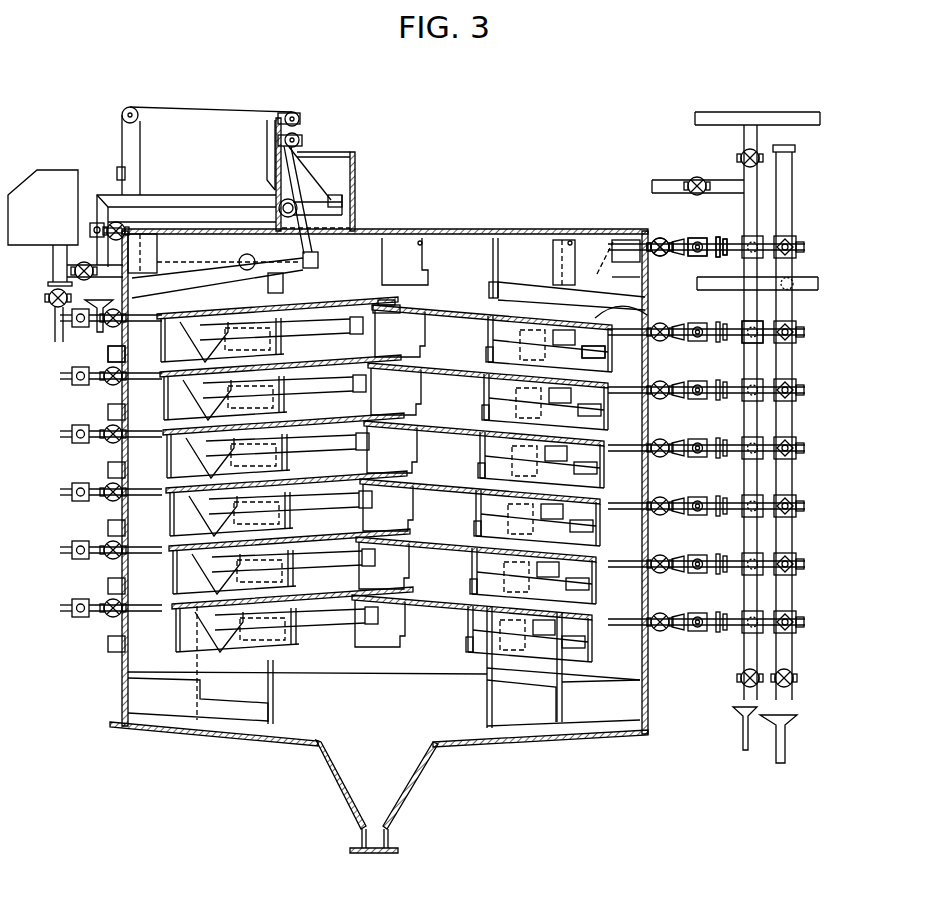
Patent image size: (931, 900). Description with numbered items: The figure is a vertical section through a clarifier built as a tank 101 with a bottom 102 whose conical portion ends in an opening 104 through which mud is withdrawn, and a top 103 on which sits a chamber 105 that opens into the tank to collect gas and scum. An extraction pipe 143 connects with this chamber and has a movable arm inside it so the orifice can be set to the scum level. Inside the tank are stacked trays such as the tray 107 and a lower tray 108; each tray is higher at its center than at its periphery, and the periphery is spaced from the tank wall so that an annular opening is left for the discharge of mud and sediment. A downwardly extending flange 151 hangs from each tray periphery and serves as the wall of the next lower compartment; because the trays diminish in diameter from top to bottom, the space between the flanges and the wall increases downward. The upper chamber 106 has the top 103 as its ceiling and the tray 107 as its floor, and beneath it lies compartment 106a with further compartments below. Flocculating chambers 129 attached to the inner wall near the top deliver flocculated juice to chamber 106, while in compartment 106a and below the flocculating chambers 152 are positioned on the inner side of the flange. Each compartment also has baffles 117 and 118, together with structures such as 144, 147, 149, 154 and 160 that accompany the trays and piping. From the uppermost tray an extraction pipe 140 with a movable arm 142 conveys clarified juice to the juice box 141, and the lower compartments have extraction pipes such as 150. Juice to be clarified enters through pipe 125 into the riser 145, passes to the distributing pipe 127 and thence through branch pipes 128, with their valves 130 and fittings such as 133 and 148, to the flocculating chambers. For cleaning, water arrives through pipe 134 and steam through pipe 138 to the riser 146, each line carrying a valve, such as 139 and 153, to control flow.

The tank 101 is at (121, 680).
The bottom 102 is at (191, 742).
The top 103 is at (438, 232).
The opening 104 is at (380, 853).
The chamber 105 is at (353, 170).
The upper chamber 106 is at (470, 279).
The compartment 106a is at (480, 354).
The tray 107 is at (321, 305).
The inclined shelf 108 is at (289, 366).
The baffle 117 is at (262, 285).
The baffle 118 is at (498, 284).
The pipe 125 is at (700, 286).
The distributing pipe 127 is at (705, 229).
The branch pipes 128 is at (668, 238).
The flocculating chambers 129 is at (622, 250).
The shut-off valve 130 is at (653, 252).
The flange coupling 133 is at (726, 262).
The pipe 134 is at (698, 115).
The pipe 138 is at (652, 186).
The inlet valve 139 is at (688, 180).
The extraction pipe 140 is at (195, 268).
The juice box 141 is at (58, 176).
The movable arm 142 is at (318, 265).
The extraction pipe 143 is at (213, 207).
The pulley ring 144 is at (343, 203).
The riser 145 is at (804, 160).
The riser 146 is at (744, 212).
The partition box 147 is at (419, 246).
The pipe fitting 148 is at (742, 341).
The bracket 149 is at (400, 306).
The extraction pipe 150 is at (108, 353).
The flange 151 is at (128, 336).
The flocculating chamber 152 is at (606, 346).
The valve 153 is at (744, 160).
The outlet pipe 154 is at (620, 323).
The deflector 160 is at (640, 290).